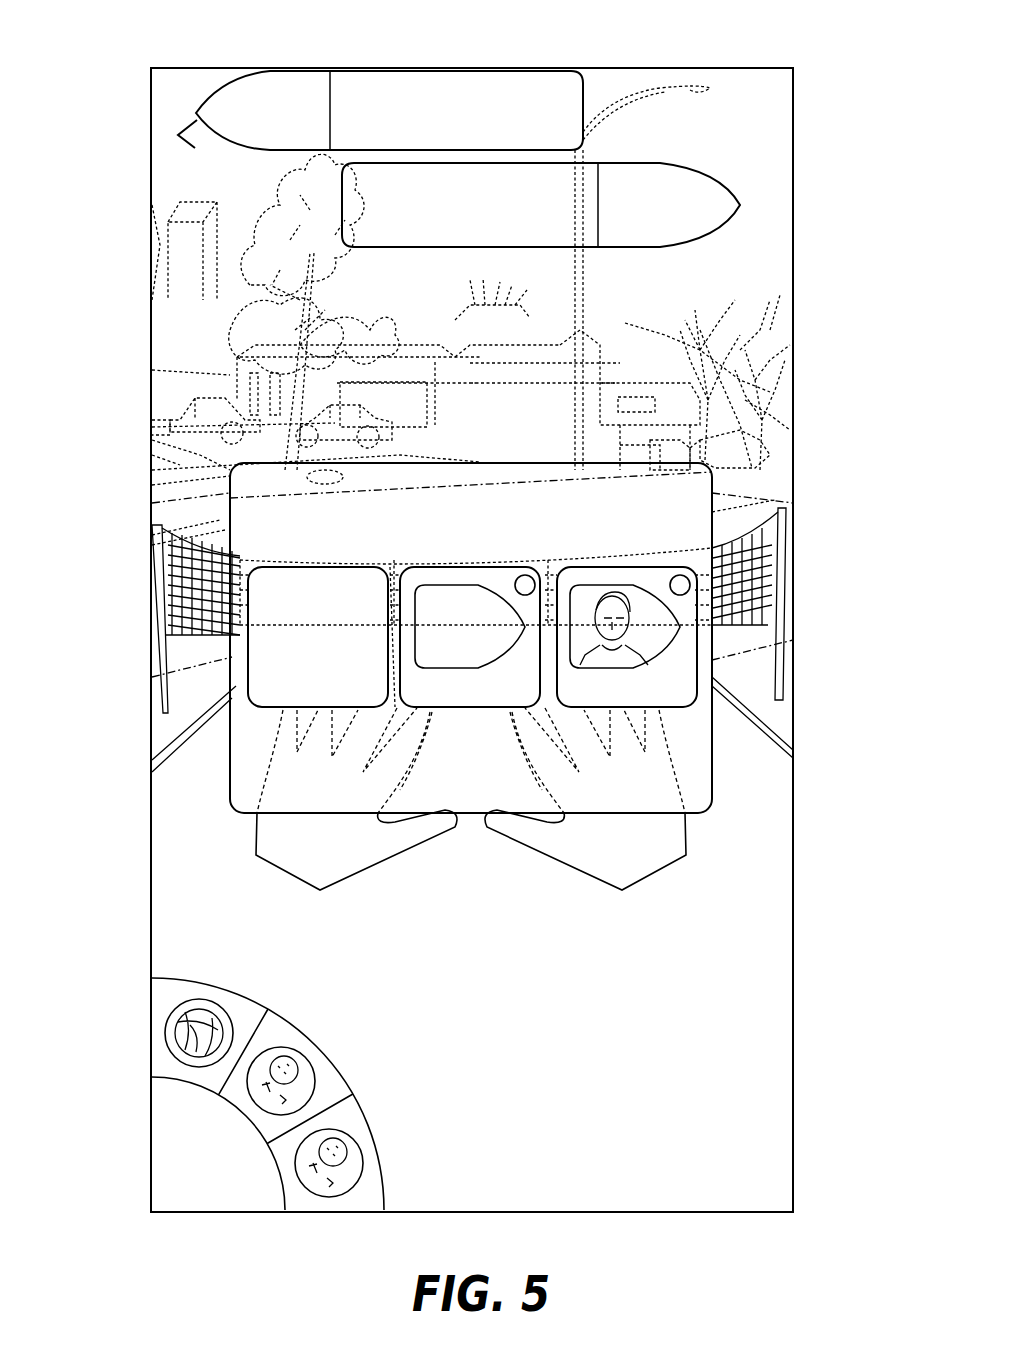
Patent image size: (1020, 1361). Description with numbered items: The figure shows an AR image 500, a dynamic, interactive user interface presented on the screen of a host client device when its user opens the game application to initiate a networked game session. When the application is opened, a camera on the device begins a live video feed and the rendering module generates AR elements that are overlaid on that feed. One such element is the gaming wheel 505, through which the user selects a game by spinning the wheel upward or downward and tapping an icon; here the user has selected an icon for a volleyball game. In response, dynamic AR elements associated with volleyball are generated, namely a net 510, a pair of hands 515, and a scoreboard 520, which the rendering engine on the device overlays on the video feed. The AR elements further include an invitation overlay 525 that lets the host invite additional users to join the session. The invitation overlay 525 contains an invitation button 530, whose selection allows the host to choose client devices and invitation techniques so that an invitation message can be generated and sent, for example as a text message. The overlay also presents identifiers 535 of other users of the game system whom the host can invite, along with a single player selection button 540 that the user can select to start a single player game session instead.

The AR image 500 is at (520, 608).
The gaming wheel 505 is at (209, 1080).
The net 510 is at (415, 461).
The pair of hands 515 is at (363, 799).
The scoreboard 520 is at (387, 159).
The invitation overlay 525 is at (465, 638).
The invitation button 530 is at (214, 637).
The identifiers 535 is at (639, 637).
The single player selection button 540 is at (644, 757).